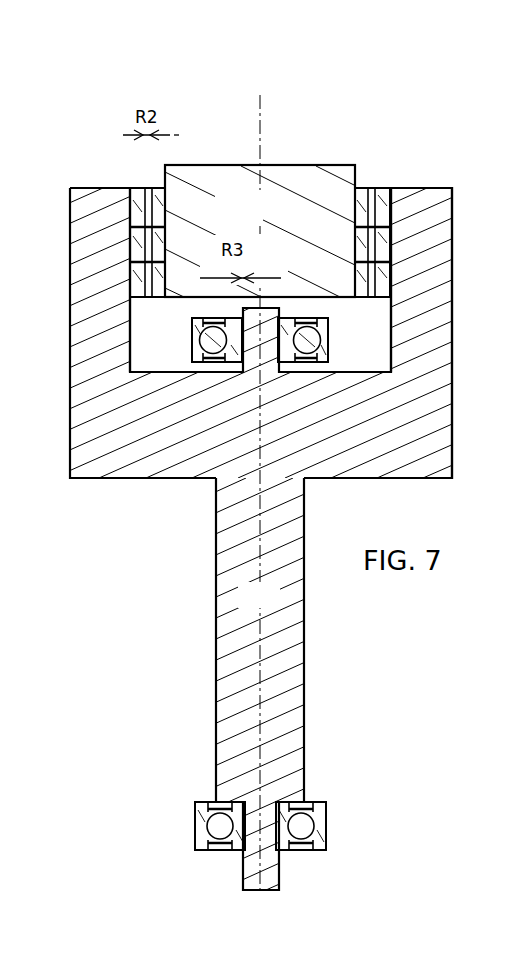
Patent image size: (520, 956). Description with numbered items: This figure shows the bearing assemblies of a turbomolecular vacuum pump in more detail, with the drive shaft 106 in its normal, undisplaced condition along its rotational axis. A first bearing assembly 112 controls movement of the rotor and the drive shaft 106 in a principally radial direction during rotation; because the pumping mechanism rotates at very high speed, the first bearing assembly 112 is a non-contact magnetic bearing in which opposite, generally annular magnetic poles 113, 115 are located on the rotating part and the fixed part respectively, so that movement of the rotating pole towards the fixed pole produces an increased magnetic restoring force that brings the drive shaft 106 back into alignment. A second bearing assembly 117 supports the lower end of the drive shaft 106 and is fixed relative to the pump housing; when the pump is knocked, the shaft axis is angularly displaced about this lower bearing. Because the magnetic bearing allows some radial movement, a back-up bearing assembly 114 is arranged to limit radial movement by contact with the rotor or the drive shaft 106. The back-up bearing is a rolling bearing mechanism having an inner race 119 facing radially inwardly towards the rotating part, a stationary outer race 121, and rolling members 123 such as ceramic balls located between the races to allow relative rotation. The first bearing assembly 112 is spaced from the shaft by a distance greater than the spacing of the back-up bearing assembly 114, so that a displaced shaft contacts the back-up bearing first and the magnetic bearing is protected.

The drive shaft 106 is at (276, 602).
The first bearing assembly 112 is at (104, 232).
The magnetic pole 113 is at (167, 170).
The back-up bearing assembly 114 is at (208, 380).
The magnetic pole 115 is at (130, 188).
The second bearing assembly 117 is at (326, 816).
The inner race 119 is at (192, 325).
The outer race 121 is at (331, 352).
The rolling members 123 is at (192, 346).